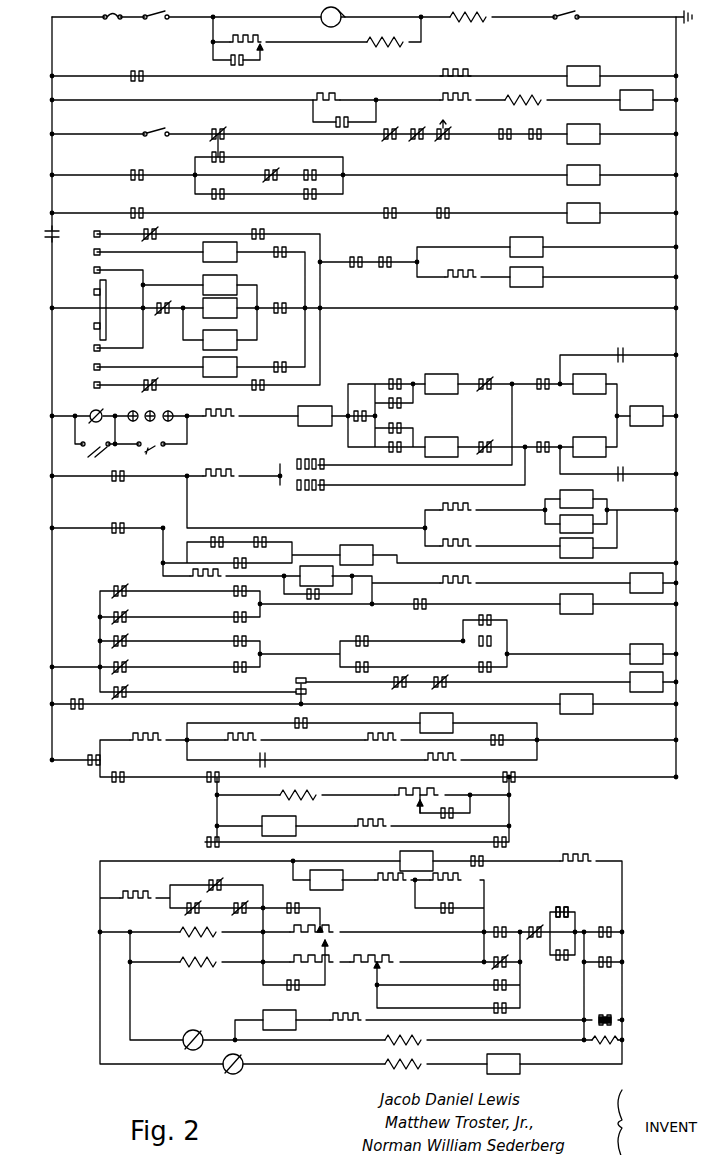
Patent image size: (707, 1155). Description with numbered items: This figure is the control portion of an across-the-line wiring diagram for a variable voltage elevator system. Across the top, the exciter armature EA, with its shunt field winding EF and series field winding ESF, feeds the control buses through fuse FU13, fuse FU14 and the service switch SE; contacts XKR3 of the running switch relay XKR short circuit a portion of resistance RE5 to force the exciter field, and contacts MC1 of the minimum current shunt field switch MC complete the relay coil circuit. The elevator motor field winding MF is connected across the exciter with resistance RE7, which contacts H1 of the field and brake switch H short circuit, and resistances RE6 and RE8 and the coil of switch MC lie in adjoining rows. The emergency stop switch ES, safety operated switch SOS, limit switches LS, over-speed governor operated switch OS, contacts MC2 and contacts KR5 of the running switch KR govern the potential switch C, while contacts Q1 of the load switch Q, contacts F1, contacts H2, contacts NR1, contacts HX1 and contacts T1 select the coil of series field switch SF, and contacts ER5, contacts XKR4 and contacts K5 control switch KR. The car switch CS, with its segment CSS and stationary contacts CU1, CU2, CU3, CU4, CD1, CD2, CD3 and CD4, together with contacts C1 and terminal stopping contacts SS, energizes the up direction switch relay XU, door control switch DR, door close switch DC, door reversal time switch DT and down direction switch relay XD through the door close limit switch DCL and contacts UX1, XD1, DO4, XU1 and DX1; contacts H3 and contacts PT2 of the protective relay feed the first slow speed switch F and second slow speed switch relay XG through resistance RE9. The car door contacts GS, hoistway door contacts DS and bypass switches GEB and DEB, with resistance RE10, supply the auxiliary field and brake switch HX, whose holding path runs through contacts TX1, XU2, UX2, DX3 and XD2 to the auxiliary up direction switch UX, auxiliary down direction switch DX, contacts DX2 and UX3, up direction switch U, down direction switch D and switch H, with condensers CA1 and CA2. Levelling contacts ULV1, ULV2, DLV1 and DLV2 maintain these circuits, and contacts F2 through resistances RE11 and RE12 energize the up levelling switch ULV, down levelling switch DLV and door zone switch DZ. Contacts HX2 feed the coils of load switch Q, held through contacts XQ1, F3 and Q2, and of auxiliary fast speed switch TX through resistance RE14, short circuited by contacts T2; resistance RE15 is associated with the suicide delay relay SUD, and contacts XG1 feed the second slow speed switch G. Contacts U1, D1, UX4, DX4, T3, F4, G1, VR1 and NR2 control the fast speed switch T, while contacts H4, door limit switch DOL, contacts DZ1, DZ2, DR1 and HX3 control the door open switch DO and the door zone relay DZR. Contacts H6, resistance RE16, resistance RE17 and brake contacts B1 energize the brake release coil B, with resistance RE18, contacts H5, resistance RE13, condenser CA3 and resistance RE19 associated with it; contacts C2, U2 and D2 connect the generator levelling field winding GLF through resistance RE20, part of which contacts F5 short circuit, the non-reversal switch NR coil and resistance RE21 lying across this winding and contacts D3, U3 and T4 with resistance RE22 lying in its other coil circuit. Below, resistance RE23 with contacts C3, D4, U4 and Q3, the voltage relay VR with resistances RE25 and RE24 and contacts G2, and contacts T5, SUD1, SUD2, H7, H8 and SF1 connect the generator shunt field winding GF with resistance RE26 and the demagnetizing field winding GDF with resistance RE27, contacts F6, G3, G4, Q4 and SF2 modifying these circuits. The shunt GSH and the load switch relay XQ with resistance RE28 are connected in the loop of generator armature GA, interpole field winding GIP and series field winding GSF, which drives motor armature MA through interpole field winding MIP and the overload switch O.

The fuse FU13 is at (111, 27).
The switch SE is at (147, 20).
The relay coil RE5 is at (236, 40).
The ammeter EA is at (324, 24).
The resistor EF is at (386, 46).
The resistor ESF is at (466, 22).
The fuse FU14 is at (567, 20).
The relay contact XKR3 is at (261, 60).
The relay contact MC1 is at (140, 71).
The relay XKR is at (583, 76).
The relay coil RE6 is at (455, 73).
The relay coil RE7 is at (360, 93).
The relay contact H1 is at (336, 125).
The relay coil RE8 is at (455, 107).
The resistor MF is at (536, 98).
The relay MC is at (636, 100).
The switch ES is at (155, 130).
The contact SOS is at (216, 129).
The relay contact H2 is at (225, 155).
The limit switch LS is at (417, 140).
The switch OS is at (436, 124).
The relay contact MC2 is at (508, 129).
The relay contact KR5 is at (534, 140).
The relay C is at (583, 134).
The relay contact Q1 is at (135, 171).
The relay contact F1 is at (224, 191).
The relay contact NR1 is at (273, 177).
The relay contact HX1 is at (312, 171).
The relay contact T1 is at (314, 197).
The relay SF is at (583, 175).
The relay contact ER5 is at (141, 209).
The relay contact XKR4 is at (390, 209).
The relay contact K5 is at (446, 209).
The relay KR is at (583, 213).
The capacitor CS is at (64, 228).
The capacitor C1 is at (45, 236).
The terminal CU4 is at (83, 238).
The terminal CU3 is at (83, 256).
The terminal CU2 is at (83, 274).
The terminal CU1 is at (83, 293).
The terminal CD1 is at (83, 330).
The terminal CD2 is at (83, 349).
The terminal CD3 is at (83, 368).
The terminal CD4 is at (83, 388).
The selector switch CSS is at (106, 300).
The selector contact SS is at (155, 231).
The relay contact UX1 is at (262, 232).
The relay XU is at (220, 252).
The relay contact XD1 is at (280, 257).
The relay DR is at (220, 285).
The contact DCL is at (165, 303).
The relay DC is at (220, 308).
The relay contact DO4 is at (286, 301).
The relay DT is at (220, 340).
The relay contact XU1 is at (280, 362).
The relay XD is at (220, 367).
The relay contact DX1 is at (263, 389).
The relay contact H3 is at (354, 259).
The contact PT2 is at (389, 253).
The relay coil RE9 is at (450, 274).
The relay F is at (526, 247).
The relay XG is at (526, 277).
The switch GS is at (94, 425).
The switch DS is at (165, 422).
The pushbutton GEB is at (90, 457).
The pushbutton DEB is at (149, 453).
The relay coil RE10 is at (205, 414).
The relay HX is at (315, 416).
The relay contact TX1 is at (357, 408).
The relay contact XU2 is at (394, 380).
The relay contact UX2 is at (404, 411).
The relay contact DX3 is at (404, 424).
The relay contact XD2 is at (388, 443).
The relay UX is at (441, 384).
The relay DX is at (441, 447).
The relay contact DX2 is at (538, 375).
The relay contact UX3 is at (538, 439).
The relay U is at (589, 384).
The relay D is at (589, 447).
The relay H is at (646, 416).
The capacitor CA1 is at (616, 350).
The capacitor CA2 is at (622, 472).
The relay contact ULV1 is at (300, 461).
The relay contact ULV2 is at (321, 467).
The relay contact DLV1 is at (301, 489).
The relay contact DLV2 is at (321, 490).
The relay contact F2 is at (116, 481).
The relay coil RE11 is at (210, 480).
The relay coil RE12 is at (472, 507).
The relay coil RE13 is at (472, 543).
The relay ULV is at (576, 499).
The relay DLV is at (576, 524).
The relay DZ is at (576, 548).
The relay contact HX2 is at (115, 523).
The relay contact XQ1 is at (210, 540).
The relay contact F3 is at (257, 536).
The relay contact Q2 is at (246, 560).
The relay Q is at (356, 555).
The relay coil RE14 is at (190, 576).
The relay TX is at (316, 576).
The relay contact T2 is at (316, 599).
The relay coil RE15 is at (472, 581).
The relay SUD is at (646, 583).
The relay contact XG1 is at (417, 602).
The relay G is at (576, 604).
The relay contact U1 is at (234, 596).
The relay contact D1 is at (234, 622).
The relay contact UX4 is at (234, 646).
The relay contact DX4 is at (234, 672).
The relay contact T3 is at (368, 638).
The relay contact F4 is at (368, 664).
The relay contact G1 is at (491, 619).
The relay contact VR1 is at (480, 646).
The relay contact NR2 is at (493, 668).
The relay T is at (646, 654).
The relay contact H4 is at (74, 698).
The contact DOL is at (125, 689).
The contact DZ1 is at (293, 681).
The contact DZ2 is at (308, 692).
The relay contact DR1 is at (403, 688).
The relay contact HX3 is at (443, 688).
The relay DO is at (646, 682).
The relay DZR is at (576, 704).
The relay contact H6 is at (92, 755).
The relay coil RE16 is at (144, 739).
The relay coil RE17 is at (226, 740).
The relay contact B1 is at (305, 727).
The relay B is at (436, 723).
The relay coil RE18 is at (390, 738).
The relay contact H5 is at (501, 738).
The capacitor CA3 is at (267, 764).
The relay coil RE19 is at (449, 764).
The relay contact C2 is at (117, 783).
The relay contact U2 is at (209, 776).
The relay contact D2 is at (514, 775).
The resistor GLF is at (300, 800).
The relay coil RE20 is at (413, 812).
The relay contact F5 is at (456, 816).
The relay NR is at (347, 843).
The relay coil RE21 is at (371, 830).
The relay contact D3 is at (208, 845).
The relay contact U3 is at (514, 855).
The relay contact T4 is at (474, 857).
The relay coil RE22 is at (579, 859).
The relay coil RE23 is at (122, 897).
The relay contact C3 is at (221, 883).
The relay contact D4 is at (192, 904).
The relay contact U4 is at (240, 904).
The relay contact Q3 is at (290, 904).
The relay VR is at (326, 880).
The relay coil RE25 is at (385, 887).
The relay coil RE24 is at (469, 883).
The relay contact G2 is at (446, 911).
The relay contact T5 is at (558, 910).
The relay contact SUD1 is at (568, 908).
The relay contact SUD2 is at (553, 968).
The relay contact H7 is at (501, 925).
The relay contact H8 is at (535, 926).
The relay contact SF1 is at (606, 925).
The field winding GF is at (193, 936).
The relay coil RE26 is at (302, 936).
The field winding GDF is at (195, 968).
The relay coil RE27 is at (361, 954).
The relay contact F6 is at (500, 957).
The relay contact G3 is at (495, 982).
The relay contact G4 is at (495, 1005).
The relay contact Q4 is at (292, 988).
The relay contact SF2 is at (606, 971).
The shunt GSH is at (606, 1012).
The relay XQ is at (279, 1020).
The relay coil RE28 is at (352, 1011).
The generator armature GA is at (184, 1038).
The interpole winding GIP is at (401, 1039).
The series field GSF is at (601, 1048).
The motor armature MA is at (241, 1060).
The interpole winding MIP is at (396, 1063).
The overload relay O is at (503, 1064).